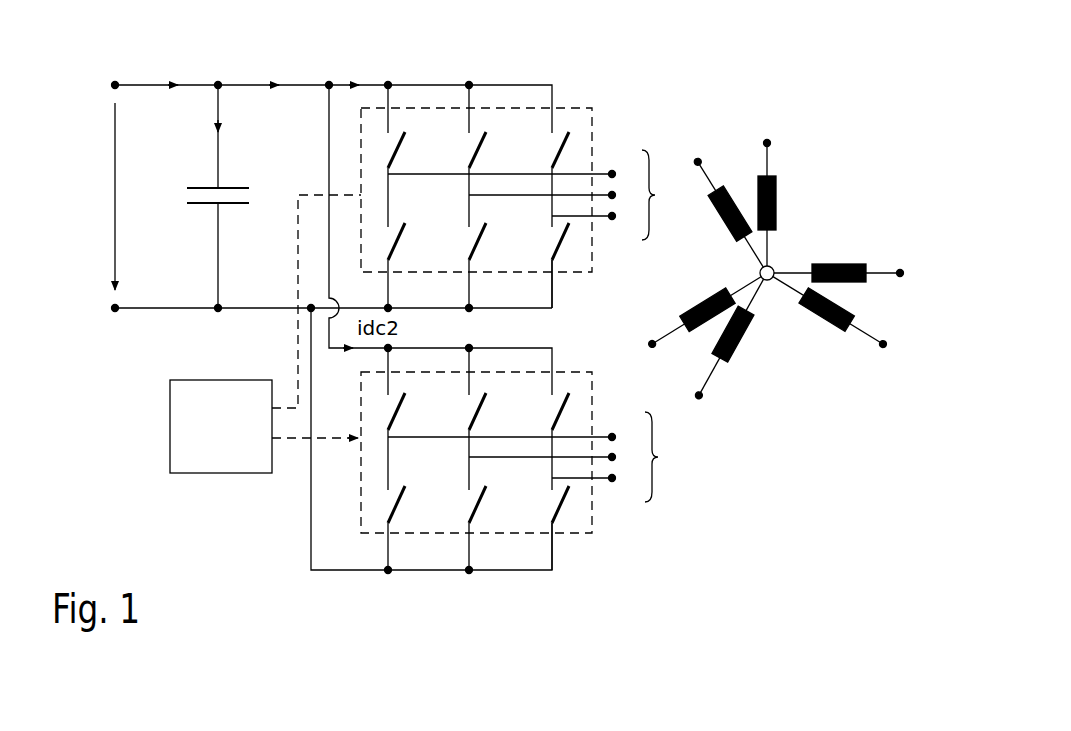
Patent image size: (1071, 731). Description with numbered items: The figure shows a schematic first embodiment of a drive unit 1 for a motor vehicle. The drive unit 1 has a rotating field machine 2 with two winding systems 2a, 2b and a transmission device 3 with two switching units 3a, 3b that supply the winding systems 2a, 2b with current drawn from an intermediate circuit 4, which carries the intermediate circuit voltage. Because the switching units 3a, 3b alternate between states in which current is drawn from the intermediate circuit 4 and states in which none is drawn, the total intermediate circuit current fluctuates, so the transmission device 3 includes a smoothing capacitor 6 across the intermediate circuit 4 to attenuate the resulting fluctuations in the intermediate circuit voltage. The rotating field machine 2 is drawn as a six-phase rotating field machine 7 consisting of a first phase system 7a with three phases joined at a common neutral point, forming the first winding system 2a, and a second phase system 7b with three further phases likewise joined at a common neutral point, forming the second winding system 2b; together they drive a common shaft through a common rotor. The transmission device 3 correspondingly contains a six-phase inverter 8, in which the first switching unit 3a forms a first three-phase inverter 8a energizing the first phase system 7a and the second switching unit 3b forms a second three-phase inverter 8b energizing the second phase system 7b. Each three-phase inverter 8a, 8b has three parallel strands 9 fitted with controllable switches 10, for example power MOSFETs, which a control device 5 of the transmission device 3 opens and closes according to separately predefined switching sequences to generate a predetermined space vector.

The drive unit 1 is at (90, 73).
The rotating field machine 2 is at (783, 270).
The first winding system 2a is at (646, 133).
The second winding system 2b is at (665, 497).
The transmission device 3 is at (575, 63).
The first switching unit 3a is at (522, 330).
The second switching unit 3b is at (517, 487).
The intermediate circuit 4 is at (102, 195).
The control device 5 is at (228, 440).
The smoothing capacitor 6 is at (234, 186).
The n-phase rotating field machine 7 is at (878, 265).
The first phase system 7a is at (535, 195).
The second phase system 7b is at (539, 457).
The n-phase inverter 8 is at (496, 104).
The first three-phase inverter 8a is at (426, 145).
The second three-phase inverter 8b is at (375, 513).
The strand 9 is at (388, 290).
The controllable switch 10 is at (398, 243).